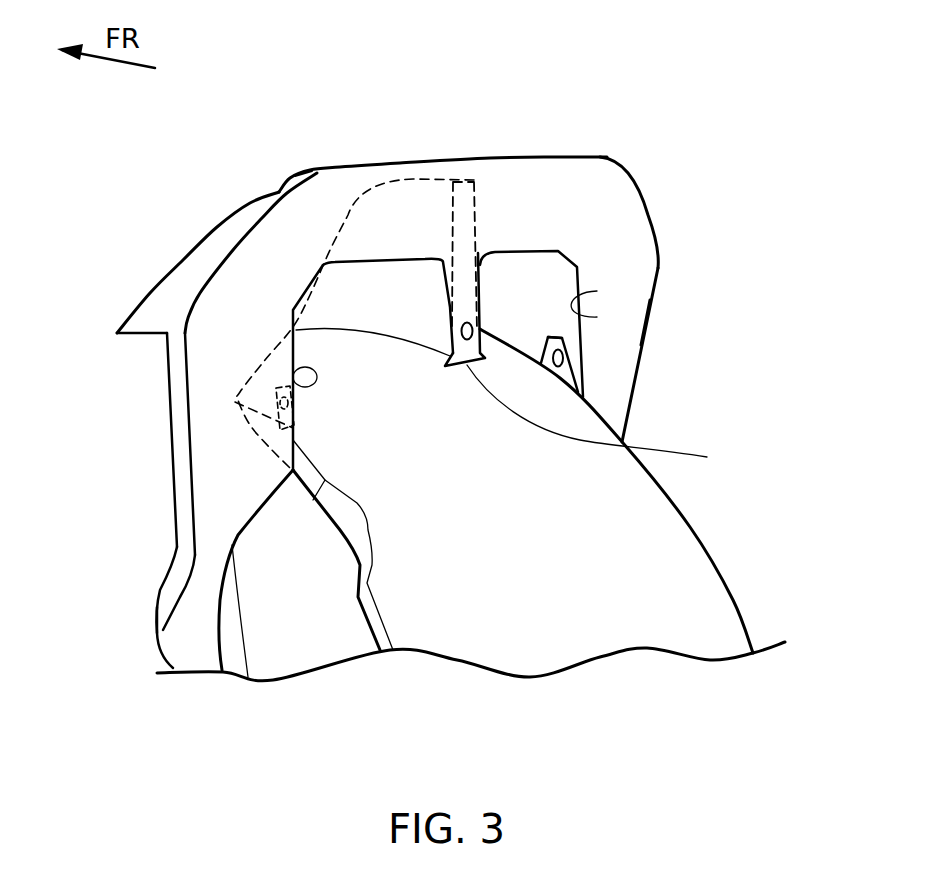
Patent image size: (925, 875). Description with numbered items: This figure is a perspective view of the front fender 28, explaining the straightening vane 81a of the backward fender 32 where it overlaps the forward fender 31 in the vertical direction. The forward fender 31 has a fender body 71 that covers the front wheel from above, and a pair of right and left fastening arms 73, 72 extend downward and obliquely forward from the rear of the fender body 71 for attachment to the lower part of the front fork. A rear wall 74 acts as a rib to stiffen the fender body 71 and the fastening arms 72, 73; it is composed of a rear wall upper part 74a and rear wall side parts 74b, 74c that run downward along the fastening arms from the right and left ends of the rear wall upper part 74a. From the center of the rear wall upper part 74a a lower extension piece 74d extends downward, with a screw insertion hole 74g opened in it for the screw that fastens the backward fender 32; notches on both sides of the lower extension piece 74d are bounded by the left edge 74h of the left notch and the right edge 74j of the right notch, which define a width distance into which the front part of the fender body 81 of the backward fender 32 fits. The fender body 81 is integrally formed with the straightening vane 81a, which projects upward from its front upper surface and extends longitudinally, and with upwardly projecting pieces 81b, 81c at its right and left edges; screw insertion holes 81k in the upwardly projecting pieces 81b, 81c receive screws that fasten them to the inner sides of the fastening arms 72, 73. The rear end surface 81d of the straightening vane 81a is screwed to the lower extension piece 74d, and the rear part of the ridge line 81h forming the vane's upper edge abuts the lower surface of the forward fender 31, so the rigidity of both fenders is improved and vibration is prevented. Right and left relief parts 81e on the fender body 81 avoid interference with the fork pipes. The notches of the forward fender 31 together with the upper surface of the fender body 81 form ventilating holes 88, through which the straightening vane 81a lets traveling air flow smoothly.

The front fender 28 is at (330, 100).
The forward fender 31 is at (180, 257).
The backward fender 32 is at (738, 600).
The fender body 71 is at (170, 290).
The fastening arm 72 is at (152, 621).
The fastening arm 73 is at (648, 338).
The rear wall 74 is at (592, 188).
The rear wall upper part 74a is at (300, 227).
The rear wall side part 74b is at (210, 517).
The rear wall side part 74c is at (617, 398).
The lower extension piece 74d is at (483, 283).
The screw insertion hole 74g is at (455, 330).
The left edge of left notch 74h is at (292, 364).
The right edge of right notch 74j is at (597, 291).
The fender body 81 is at (600, 598).
The straightening vane 81a is at (403, 272).
The upwardly projecting piece 81b is at (270, 393).
The upwardly projecting piece 81c is at (573, 337).
The rear end surface 81d is at (611, 420).
The relief part 81e is at (353, 520).
The ridge line 81h is at (303, 295).
The screw insertion hole 81k is at (262, 442).
The ventilating hole 88 is at (393, 312).